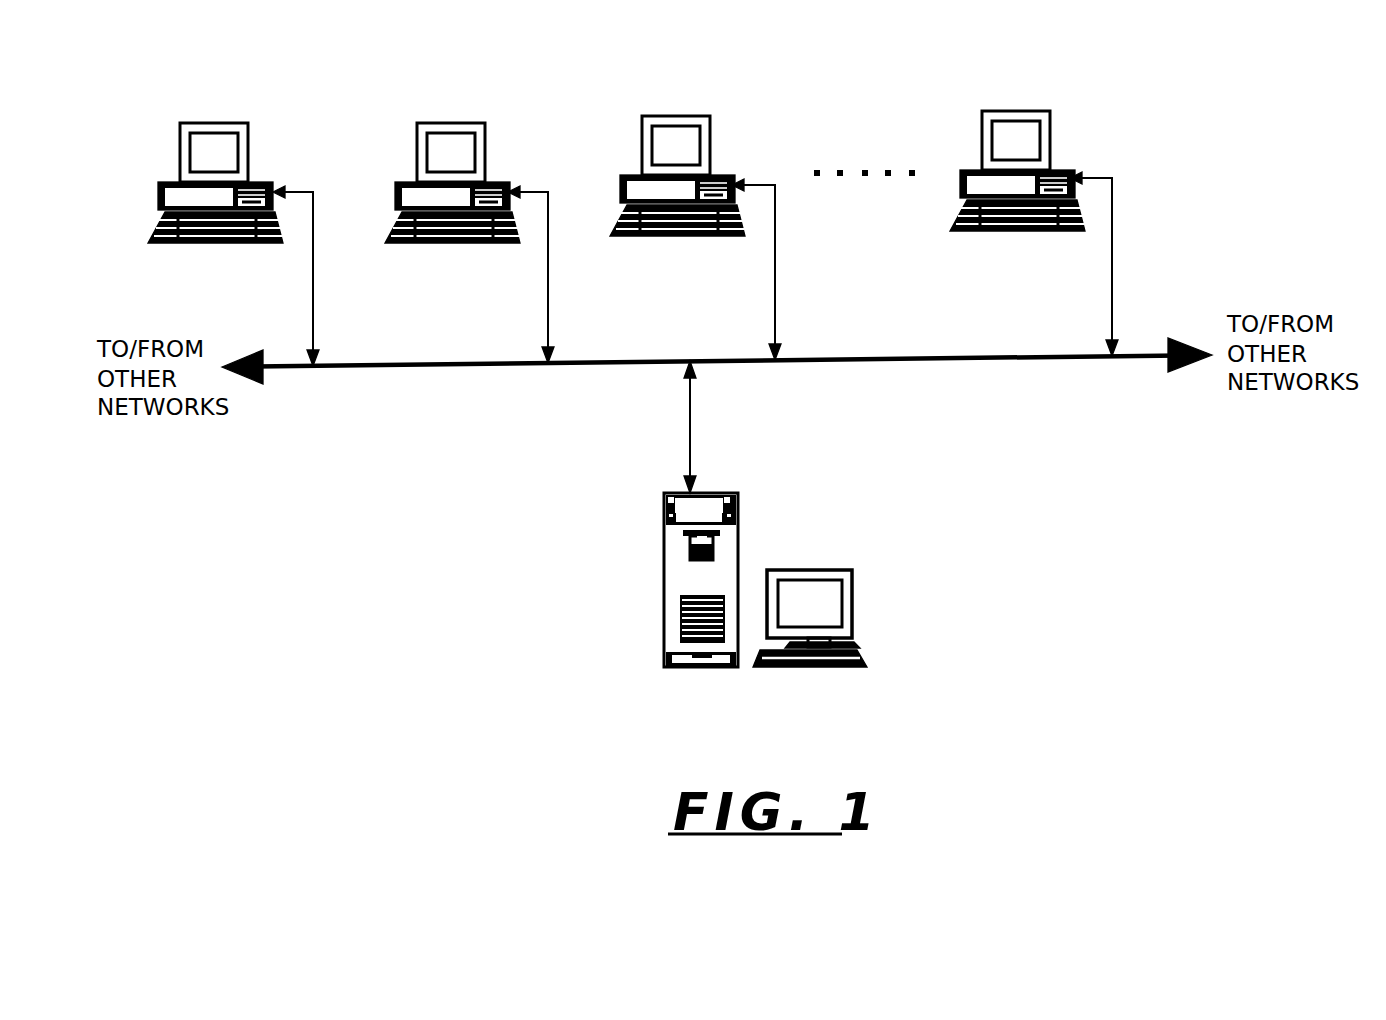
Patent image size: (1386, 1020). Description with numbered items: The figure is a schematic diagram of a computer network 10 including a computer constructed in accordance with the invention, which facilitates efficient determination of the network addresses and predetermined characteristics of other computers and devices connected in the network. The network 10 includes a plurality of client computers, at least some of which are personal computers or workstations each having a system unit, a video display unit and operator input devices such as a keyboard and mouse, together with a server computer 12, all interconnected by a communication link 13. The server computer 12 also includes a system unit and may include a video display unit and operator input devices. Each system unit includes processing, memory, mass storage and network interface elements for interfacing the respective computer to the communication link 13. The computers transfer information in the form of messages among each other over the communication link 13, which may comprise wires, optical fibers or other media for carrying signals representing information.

The computer network 10 is at (242, 652).
The server computer 12 is at (664, 613).
The communication link 13 is at (955, 354).